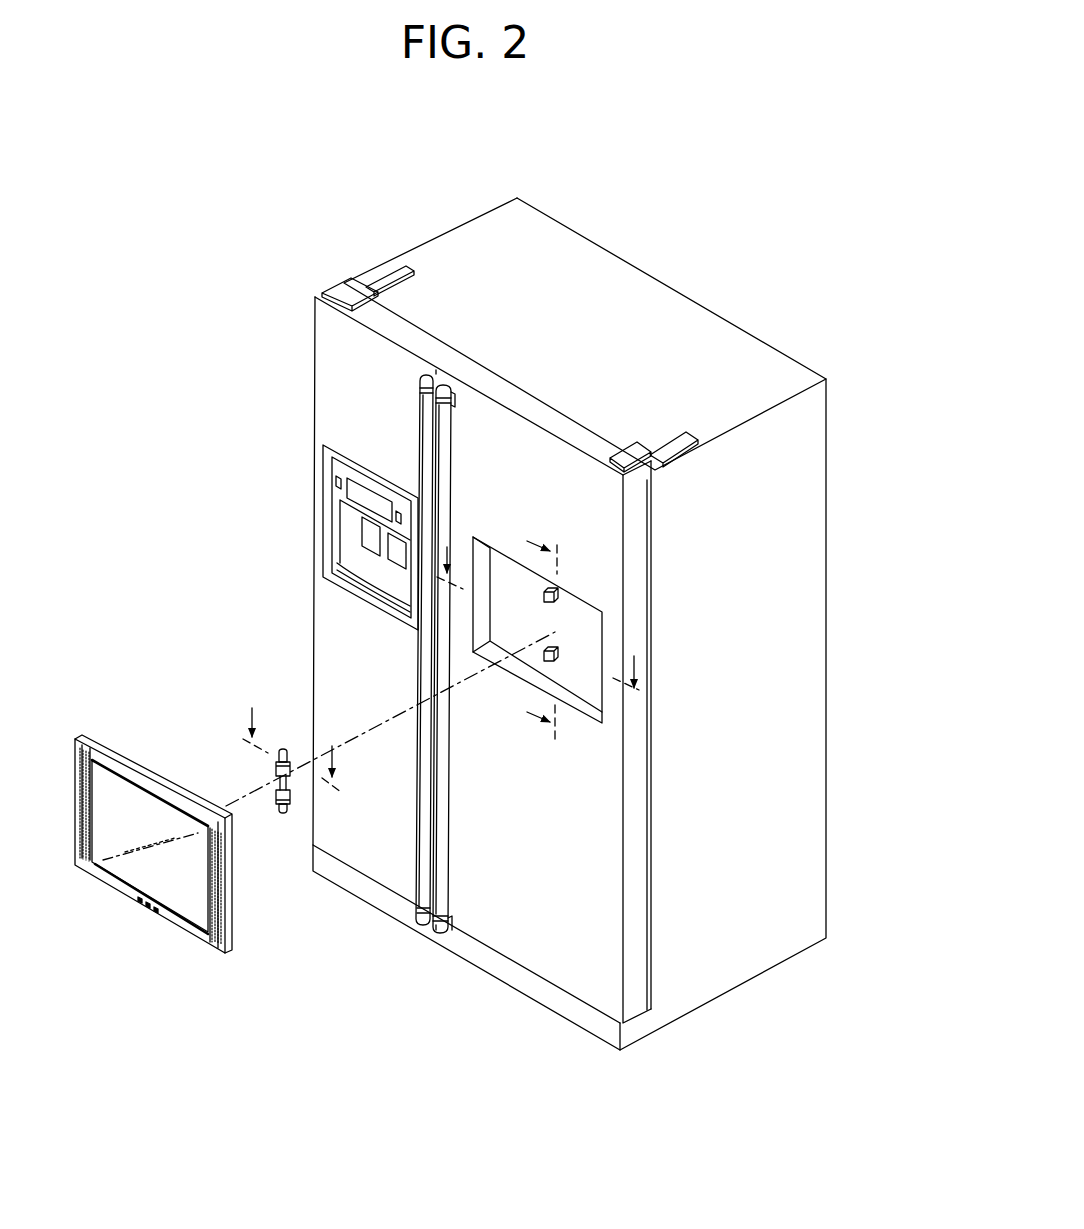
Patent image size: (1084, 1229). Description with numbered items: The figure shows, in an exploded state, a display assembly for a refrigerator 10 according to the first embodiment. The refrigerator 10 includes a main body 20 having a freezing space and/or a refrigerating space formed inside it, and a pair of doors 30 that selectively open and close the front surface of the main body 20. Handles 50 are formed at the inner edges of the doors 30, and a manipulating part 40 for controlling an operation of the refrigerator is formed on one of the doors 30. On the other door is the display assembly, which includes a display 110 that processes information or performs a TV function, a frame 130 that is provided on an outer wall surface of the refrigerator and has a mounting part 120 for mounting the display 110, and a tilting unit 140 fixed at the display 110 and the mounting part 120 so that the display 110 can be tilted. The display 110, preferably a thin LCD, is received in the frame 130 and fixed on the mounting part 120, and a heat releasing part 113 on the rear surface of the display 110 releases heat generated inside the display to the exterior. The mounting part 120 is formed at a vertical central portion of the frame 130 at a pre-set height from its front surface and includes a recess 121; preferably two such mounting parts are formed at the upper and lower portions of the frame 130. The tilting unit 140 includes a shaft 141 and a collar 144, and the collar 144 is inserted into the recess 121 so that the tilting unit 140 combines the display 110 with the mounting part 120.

The refrigerator 10 is at (718, 263).
The main body 20 is at (815, 530).
The doors 30 is at (323, 638).
The manipulating part 40 is at (337, 479).
The handles 50 is at (428, 427).
The display 110 is at (132, 875).
The heat releasing part 113 is at (233, 908).
The mounting part 120 is at (560, 602).
The recess 121 is at (558, 592).
The frame 130 is at (590, 683).
The tilting unit 140 is at (270, 777).
The shaft 141 is at (284, 750).
The collar 144 is at (283, 812).